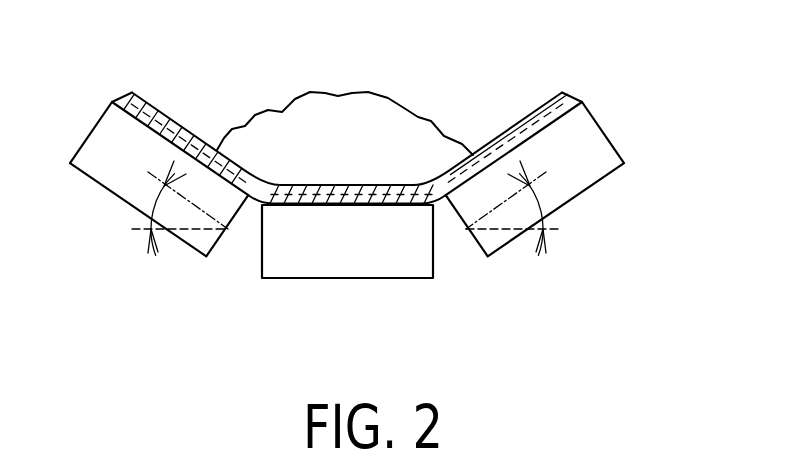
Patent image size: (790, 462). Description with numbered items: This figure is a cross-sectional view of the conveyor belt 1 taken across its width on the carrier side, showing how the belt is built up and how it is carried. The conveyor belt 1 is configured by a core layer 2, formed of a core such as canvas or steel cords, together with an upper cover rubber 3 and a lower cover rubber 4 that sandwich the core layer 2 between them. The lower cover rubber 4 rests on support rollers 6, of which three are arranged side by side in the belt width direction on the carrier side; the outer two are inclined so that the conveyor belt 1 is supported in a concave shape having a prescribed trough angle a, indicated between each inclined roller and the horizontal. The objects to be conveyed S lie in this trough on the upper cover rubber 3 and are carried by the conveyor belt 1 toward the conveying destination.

The conveyor belt 1 is at (213, 112).
The core layer 2 is at (175, 123).
The upper cover rubber 3 is at (486, 148).
The lower cover rubber 4 is at (305, 205).
The support rollers 6 is at (103, 182).
The objects to be conveyed S is at (338, 110).
The trough angle a is at (347, 208).